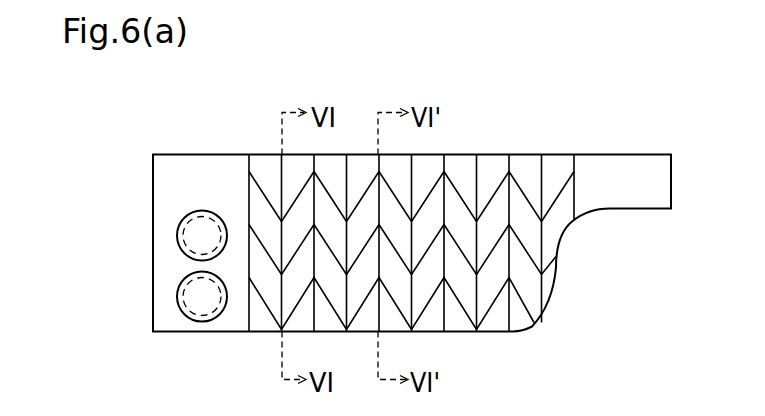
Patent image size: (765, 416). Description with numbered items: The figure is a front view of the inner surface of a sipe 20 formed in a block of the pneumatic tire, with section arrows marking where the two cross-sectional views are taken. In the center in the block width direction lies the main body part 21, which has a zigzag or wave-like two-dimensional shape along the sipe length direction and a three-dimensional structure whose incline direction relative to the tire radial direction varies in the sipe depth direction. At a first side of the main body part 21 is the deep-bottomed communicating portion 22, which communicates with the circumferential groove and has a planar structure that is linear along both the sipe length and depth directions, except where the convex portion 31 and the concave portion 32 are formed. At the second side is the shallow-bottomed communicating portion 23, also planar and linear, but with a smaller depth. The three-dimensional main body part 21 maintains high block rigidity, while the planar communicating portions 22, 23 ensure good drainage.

The sipe 20 is at (542, 154).
The main body part 21 is at (458, 168).
The deep-bottomed communicating portion 22 is at (208, 168).
The shallow-bottomed communicating portion 23 is at (648, 175).
The convex portion 31 is at (183, 248).
The concave portion 32 is at (178, 290).